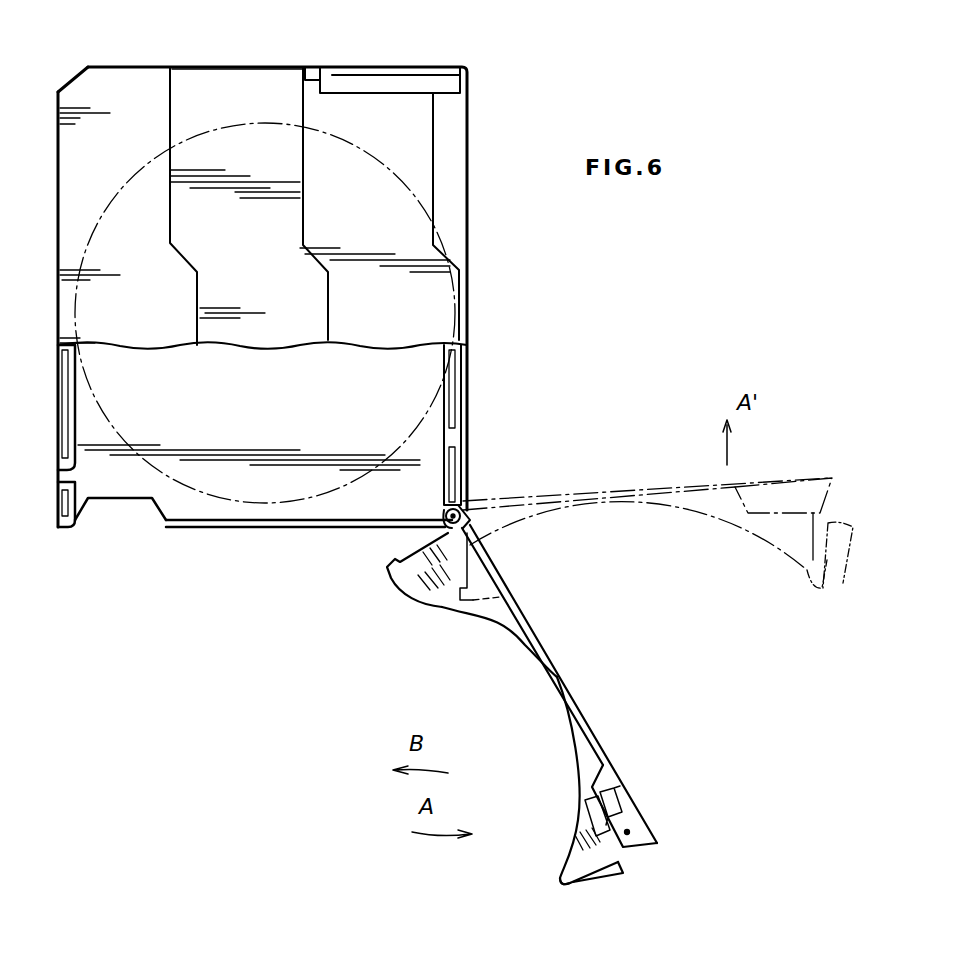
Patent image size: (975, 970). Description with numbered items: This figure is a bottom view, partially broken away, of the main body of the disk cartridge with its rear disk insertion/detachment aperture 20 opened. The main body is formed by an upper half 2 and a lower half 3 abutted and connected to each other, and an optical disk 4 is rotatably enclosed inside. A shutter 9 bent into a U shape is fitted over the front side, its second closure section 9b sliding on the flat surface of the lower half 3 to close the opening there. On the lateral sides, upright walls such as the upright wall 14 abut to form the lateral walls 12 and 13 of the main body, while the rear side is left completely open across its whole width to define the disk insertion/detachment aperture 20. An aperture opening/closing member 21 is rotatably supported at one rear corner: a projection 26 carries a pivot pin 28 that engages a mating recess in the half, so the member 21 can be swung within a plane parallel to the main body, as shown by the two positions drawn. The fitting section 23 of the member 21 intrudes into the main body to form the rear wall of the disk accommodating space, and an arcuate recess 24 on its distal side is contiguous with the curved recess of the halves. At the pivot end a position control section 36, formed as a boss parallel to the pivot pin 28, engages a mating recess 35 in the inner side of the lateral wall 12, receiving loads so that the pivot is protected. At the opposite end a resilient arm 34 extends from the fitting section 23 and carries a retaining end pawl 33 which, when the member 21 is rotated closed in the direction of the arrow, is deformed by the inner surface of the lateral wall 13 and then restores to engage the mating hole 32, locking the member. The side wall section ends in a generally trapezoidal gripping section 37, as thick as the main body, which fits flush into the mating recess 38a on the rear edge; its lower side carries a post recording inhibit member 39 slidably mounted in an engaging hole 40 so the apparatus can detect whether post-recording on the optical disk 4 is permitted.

The upper half 2 is at (222, 520).
The lower half 3 is at (70, 147).
The optical disk 4 is at (165, 150).
The shutter 9 is at (285, 85).
The second closure section 9b is at (240, 90).
The lateral wall 12 is at (56, 390).
The lateral wall 13 is at (470, 385).
The upright wall 14 is at (75, 80).
The disk insertion/detachment aperture 20 is at (300, 516).
The aperture opening/closing member 21 is at (590, 730).
The fitting section 23 is at (510, 630).
The arcuate recess 24 is at (573, 755).
The projection 26 is at (445, 512).
The pivot pin 28 is at (462, 510).
The mating hole 32 is at (56, 480).
The retaining end pawl 33 is at (622, 870).
The resilient arm 34 is at (590, 885).
The mating recess 35 is at (460, 440).
The position control section 36 is at (385, 578).
The gripping section 37 is at (610, 780).
The mating recess 38a is at (90, 505).
The post recording inhibit member 39 is at (620, 805).
The engaging hole 40 is at (600, 838).